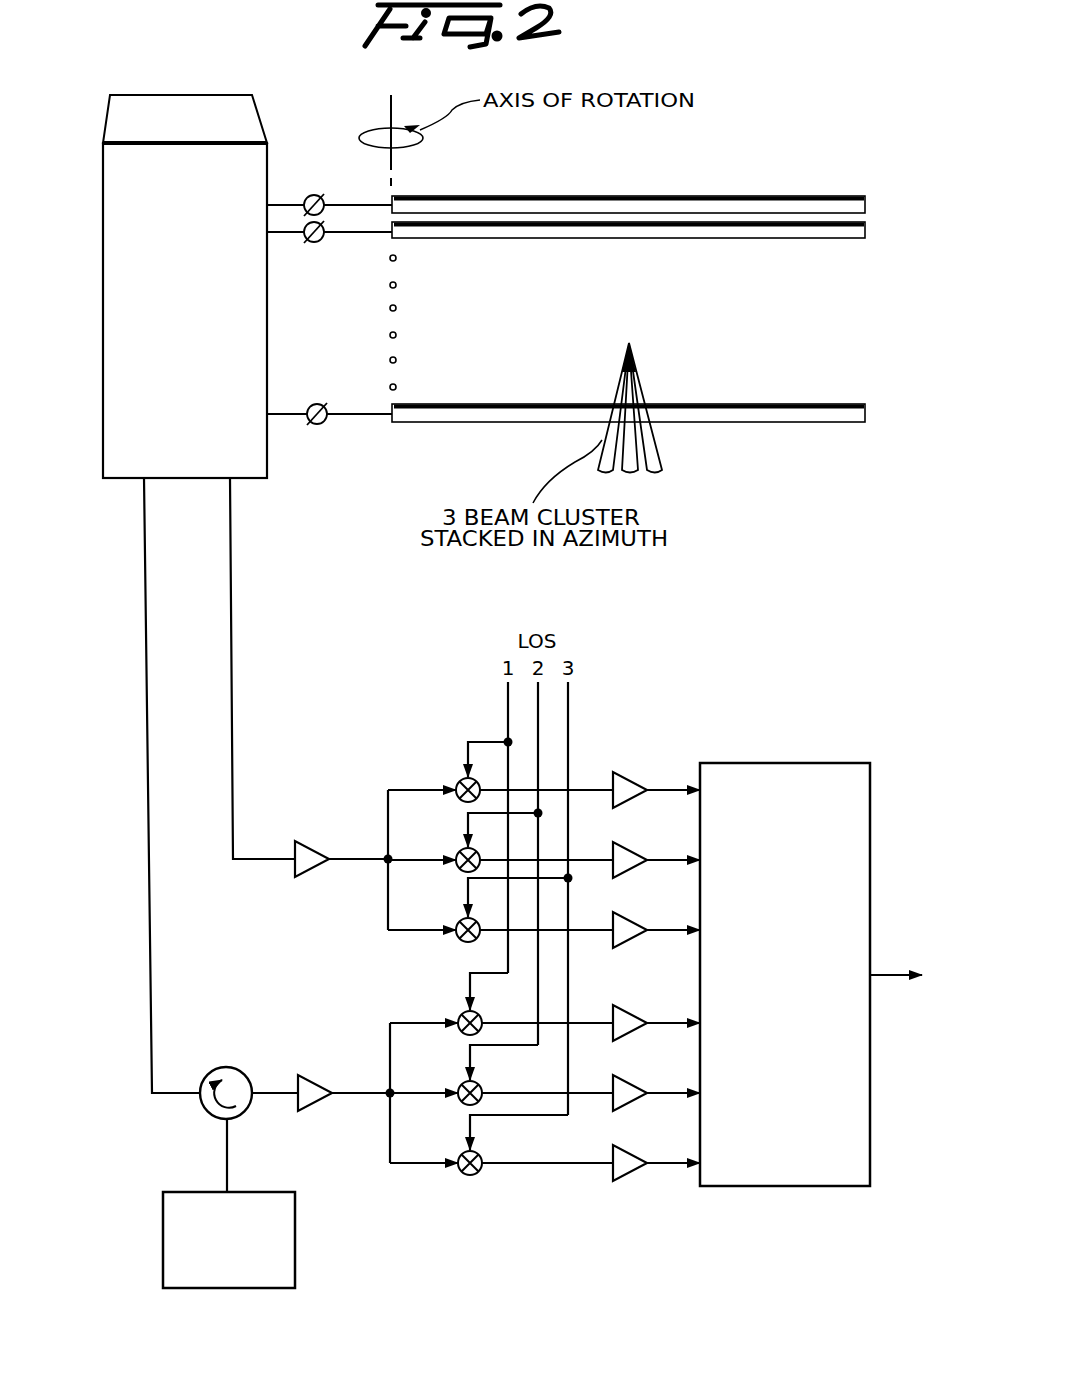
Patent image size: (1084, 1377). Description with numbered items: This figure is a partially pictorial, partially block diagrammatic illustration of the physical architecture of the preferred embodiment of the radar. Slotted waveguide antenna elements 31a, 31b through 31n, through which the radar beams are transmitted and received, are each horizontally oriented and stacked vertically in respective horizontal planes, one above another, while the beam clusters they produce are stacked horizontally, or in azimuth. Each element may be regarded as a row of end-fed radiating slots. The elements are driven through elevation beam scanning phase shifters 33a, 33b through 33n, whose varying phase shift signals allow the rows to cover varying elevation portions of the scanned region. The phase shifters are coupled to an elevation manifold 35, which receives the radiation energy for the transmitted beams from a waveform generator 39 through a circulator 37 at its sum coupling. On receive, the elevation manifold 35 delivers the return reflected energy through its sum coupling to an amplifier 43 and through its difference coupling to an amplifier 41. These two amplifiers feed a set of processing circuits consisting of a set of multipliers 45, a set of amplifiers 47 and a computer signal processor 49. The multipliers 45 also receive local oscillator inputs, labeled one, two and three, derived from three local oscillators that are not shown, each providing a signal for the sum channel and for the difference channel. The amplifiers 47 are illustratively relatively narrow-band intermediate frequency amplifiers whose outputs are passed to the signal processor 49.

The slotted waveguide antenna element 31a is at (866, 206).
The slotted waveguide antenna element 31b is at (860, 240).
The slotted waveguide antenna element 31n is at (860, 423).
The elevation beam scanning phase shifter 33a is at (317, 195).
The elevation beam scanning phase shifter 33b is at (316, 243).
The elevation beam scanning phase shifter 33n is at (317, 425).
The elevation manifold 35 is at (172, 112).
The circulator 37 is at (230, 1067).
The waveform generator 39 is at (295, 1245).
The amplifier 41 is at (308, 841).
The amplifier 43 is at (315, 1081).
The multipliers 45 is at (457, 921).
The amplifiers 47 is at (615, 759).
The computer signal processor 49 is at (787, 1187).